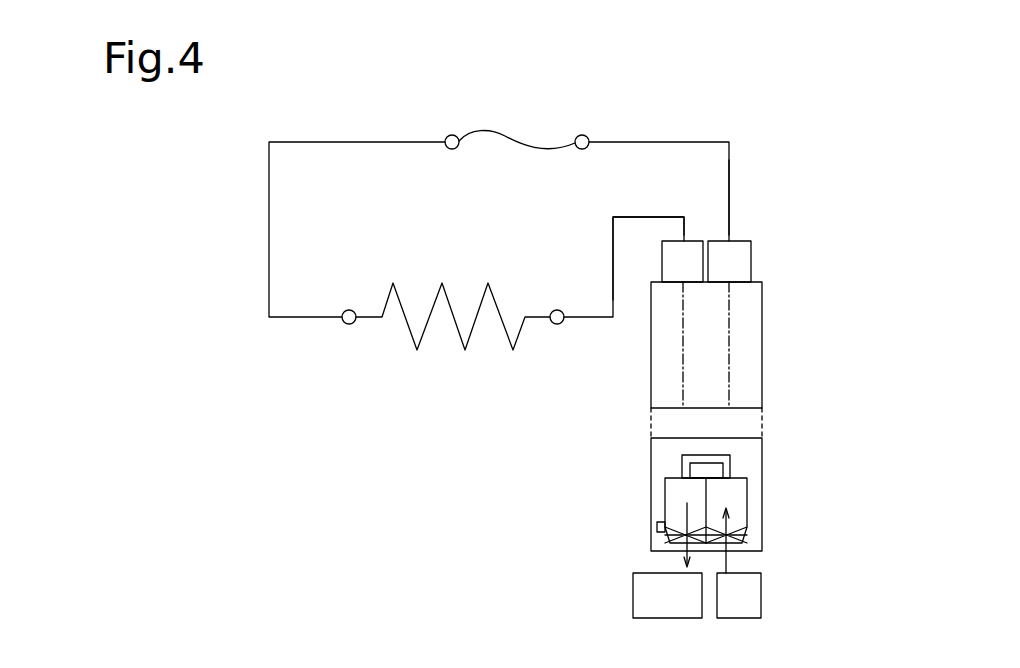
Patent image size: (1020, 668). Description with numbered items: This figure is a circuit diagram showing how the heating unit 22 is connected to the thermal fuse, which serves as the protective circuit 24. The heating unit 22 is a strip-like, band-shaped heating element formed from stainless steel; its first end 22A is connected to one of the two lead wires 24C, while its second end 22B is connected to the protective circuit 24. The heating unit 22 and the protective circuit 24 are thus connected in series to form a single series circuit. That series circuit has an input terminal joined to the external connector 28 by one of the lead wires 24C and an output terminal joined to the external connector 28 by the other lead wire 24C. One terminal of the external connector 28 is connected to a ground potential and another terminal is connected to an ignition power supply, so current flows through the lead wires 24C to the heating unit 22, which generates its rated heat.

The heating unit 22 is at (450, 290).
The first end 22A is at (345, 309).
The second end 22B is at (560, 309).
The protective circuit 24 is at (517, 140).
The lead wires 24C is at (645, 216).
The external connector 28 is at (763, 495).